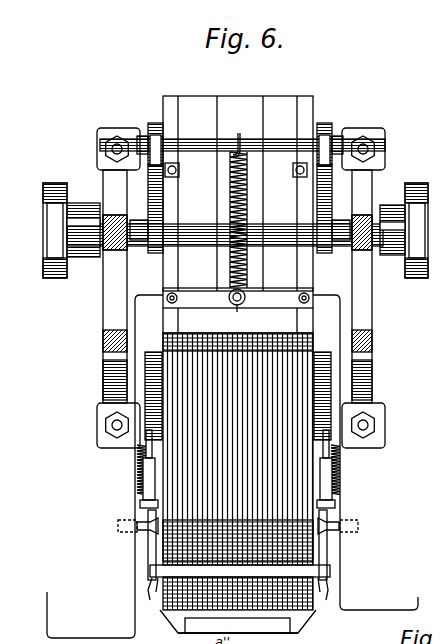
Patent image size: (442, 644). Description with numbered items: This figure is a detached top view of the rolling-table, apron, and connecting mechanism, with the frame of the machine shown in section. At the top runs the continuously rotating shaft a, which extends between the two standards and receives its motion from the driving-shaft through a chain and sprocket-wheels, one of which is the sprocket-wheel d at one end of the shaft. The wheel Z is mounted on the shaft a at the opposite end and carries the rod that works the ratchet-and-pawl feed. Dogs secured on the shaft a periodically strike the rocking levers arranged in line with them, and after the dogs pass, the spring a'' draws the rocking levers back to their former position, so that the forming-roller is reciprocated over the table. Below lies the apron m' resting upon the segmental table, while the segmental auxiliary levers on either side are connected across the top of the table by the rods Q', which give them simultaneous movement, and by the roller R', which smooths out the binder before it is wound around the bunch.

The wheel Z is at (404, 230).
The sprocket-wheel d is at (71, 230).
The shaft a is at (225, 235).
The spring a'' is at (248, 222).
The apron m' is at (238, 447).
The rods Q' is at (148, 592).
The roller R' is at (328, 592).